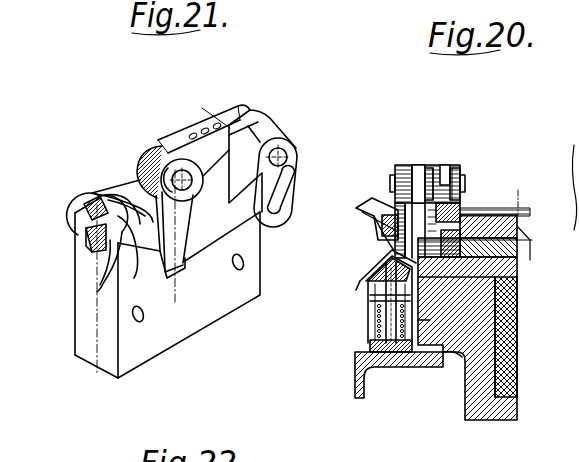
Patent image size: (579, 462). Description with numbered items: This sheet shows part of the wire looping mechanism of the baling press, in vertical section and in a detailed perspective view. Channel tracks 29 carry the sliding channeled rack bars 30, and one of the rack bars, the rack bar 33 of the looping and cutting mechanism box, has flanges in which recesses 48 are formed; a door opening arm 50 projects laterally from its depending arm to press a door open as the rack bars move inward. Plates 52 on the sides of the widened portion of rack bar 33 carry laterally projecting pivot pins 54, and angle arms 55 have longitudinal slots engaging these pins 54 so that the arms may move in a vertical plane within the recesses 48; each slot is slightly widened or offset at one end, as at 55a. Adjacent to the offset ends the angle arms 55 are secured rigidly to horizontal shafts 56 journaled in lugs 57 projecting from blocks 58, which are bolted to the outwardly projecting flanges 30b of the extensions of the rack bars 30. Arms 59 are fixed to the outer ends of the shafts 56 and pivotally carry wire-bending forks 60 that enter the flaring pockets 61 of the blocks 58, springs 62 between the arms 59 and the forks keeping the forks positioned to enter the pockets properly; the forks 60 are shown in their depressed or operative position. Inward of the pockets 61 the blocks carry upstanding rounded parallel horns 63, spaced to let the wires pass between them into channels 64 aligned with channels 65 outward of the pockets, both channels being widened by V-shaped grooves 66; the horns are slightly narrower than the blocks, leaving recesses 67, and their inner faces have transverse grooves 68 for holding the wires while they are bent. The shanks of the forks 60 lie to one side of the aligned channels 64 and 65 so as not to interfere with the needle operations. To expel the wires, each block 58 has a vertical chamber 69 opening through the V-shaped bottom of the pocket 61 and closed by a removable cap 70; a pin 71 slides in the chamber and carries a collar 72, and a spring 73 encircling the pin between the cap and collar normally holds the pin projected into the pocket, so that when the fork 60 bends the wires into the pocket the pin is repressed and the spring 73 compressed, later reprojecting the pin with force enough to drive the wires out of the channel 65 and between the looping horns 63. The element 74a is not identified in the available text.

In FIG. 20, the channel track 29 is at (356, 396).
In FIG. 20, the channeled rack bar 30 is at (466, 393).
In FIG. 20, the outwardly projecting flange 30b is at (458, 391).
In FIG. 20, the rack bar 33 is at (505, 243).
In FIG. 20, the recess 48 is at (462, 248).
In FIG. 20, the door opening arm 50 is at (376, 287).
In FIG. 20, the plate 52 is at (516, 226).
In FIG. 20, the pivot pin 54 is at (480, 216).
In FIG. 21, the angle arm 55 is at (296, 200).
In FIG. 20, the angle arm 55 is at (455, 165).
In FIG. 21, the widened or off-set end of slot 55a is at (294, 174).
In FIG. 21, the horizontal shaft 56 is at (285, 148).
In FIG. 20, the horizontal shaft 56 is at (465, 205).
In FIG. 21, the lug 57 is at (252, 128).
In FIG. 20, the lug 57 is at (432, 165).
In FIG. 21, the block 58 is at (197, 316).
In FIG. 21, the arm 59 is at (240, 110).
In FIG. 20, the arm 59 is at (415, 165).
In FIG. 21, the wire-bending fork 60 is at (165, 212).
In FIG. 20, the wire-bending fork 60 is at (392, 264).
In FIG. 21, the flaring pocket 61 is at (184, 266).
In FIG. 20, the flaring pocket 61 is at (366, 280).
In FIG. 21, the spring 62 is at (156, 160).
In FIG. 21, the looping horn 63 is at (104, 196).
In FIG. 21, the channel 64 is at (98, 252).
In FIG. 20, the channel 65 is at (400, 232).
In FIG. 21, the V-shaped groove 66 is at (108, 262).
In FIG. 21, the recess 67 is at (95, 214).
In FIG. 21, the transverse groove 68 is at (90, 206).
In FIG. 21, the vertical chamber 69 is at (128, 210).
In FIG. 20, the vertical chamber 69 is at (386, 302).
In FIG. 20, the removable cap 70 is at (404, 356).
In FIG. 20, the pin 71 is at (396, 297).
In FIG. 20, the collar 72 is at (400, 310).
In FIG. 20, the spring 73 is at (424, 322).
In FIG. 20, the stop 74a is at (396, 222).